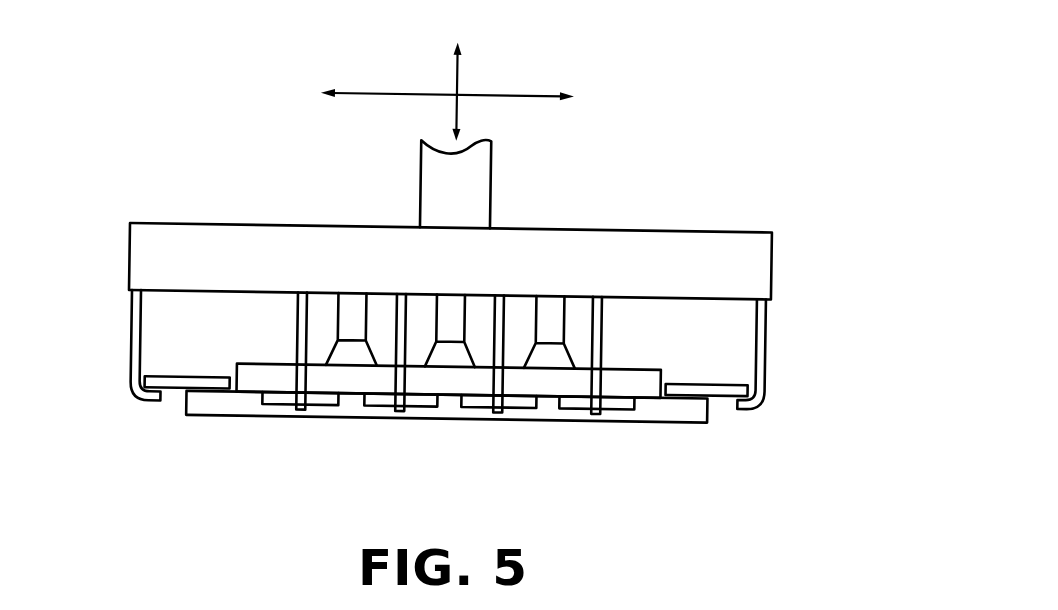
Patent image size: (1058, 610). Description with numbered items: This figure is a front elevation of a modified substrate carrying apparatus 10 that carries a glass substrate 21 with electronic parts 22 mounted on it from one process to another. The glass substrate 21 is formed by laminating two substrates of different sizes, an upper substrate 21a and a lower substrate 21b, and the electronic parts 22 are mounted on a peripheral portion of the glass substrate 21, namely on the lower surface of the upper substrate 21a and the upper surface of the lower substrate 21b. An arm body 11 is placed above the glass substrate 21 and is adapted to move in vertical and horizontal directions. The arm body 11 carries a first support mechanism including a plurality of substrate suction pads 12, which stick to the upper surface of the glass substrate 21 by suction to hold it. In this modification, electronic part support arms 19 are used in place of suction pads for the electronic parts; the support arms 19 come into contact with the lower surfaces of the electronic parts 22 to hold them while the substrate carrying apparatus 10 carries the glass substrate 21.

The substrate carrying apparatus 10 is at (634, 130).
The arm body 11 is at (567, 221).
The substrate suction pads 12 is at (368, 313).
The electronic part support arms 19 is at (130, 368).
The glass substrate 21 is at (727, 439).
The upper substrate 21a is at (654, 382).
The lower substrate 21b is at (636, 411).
The electronic parts 22 is at (179, 383).